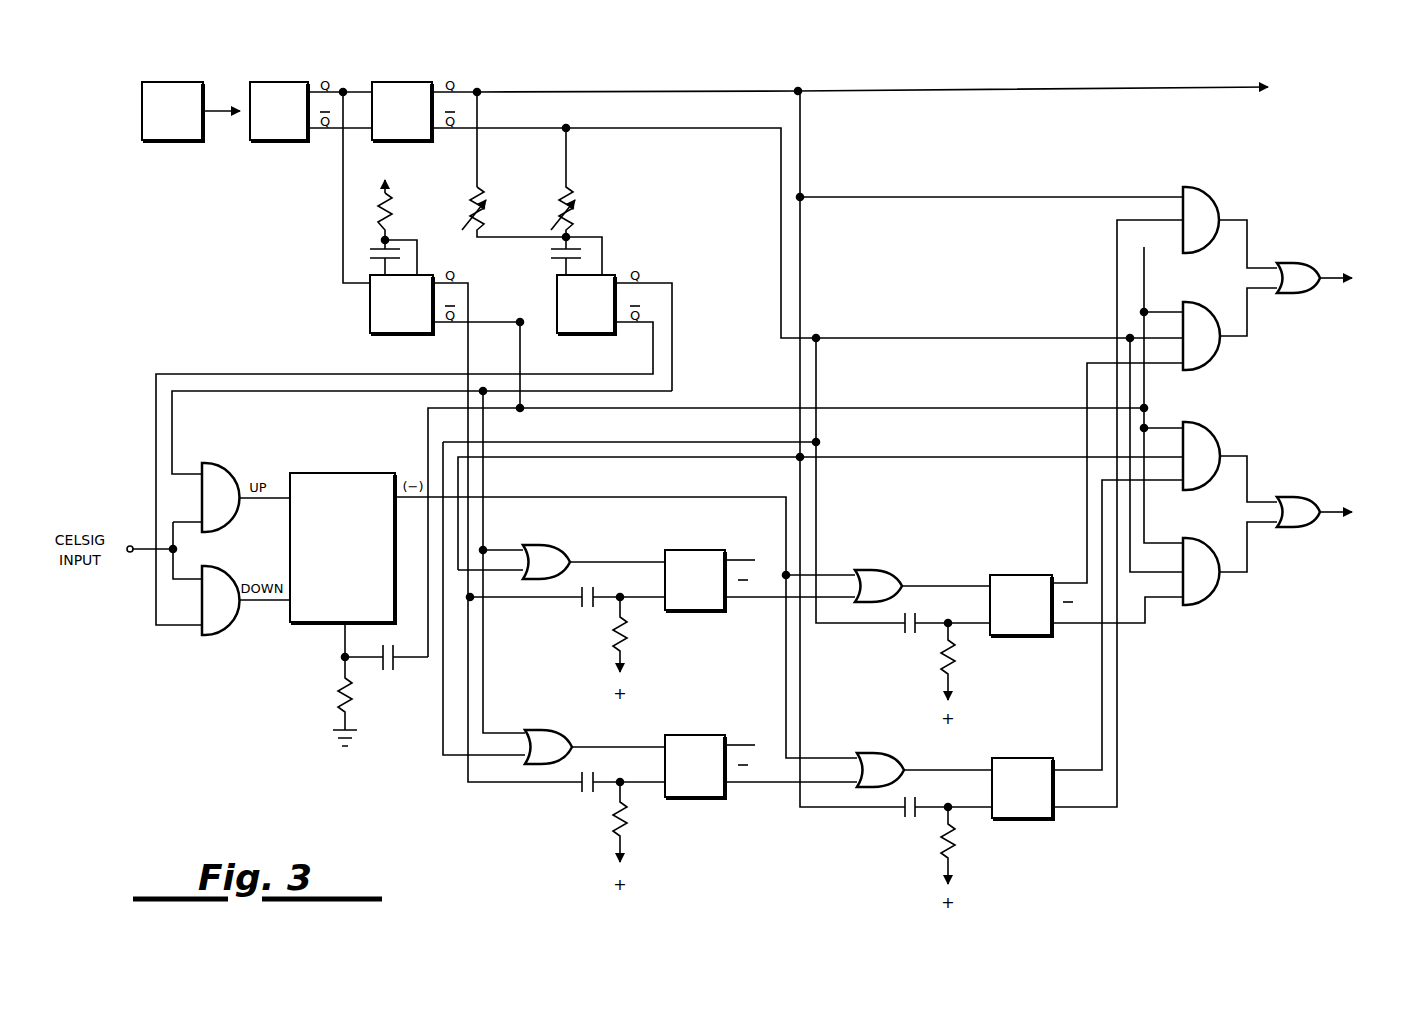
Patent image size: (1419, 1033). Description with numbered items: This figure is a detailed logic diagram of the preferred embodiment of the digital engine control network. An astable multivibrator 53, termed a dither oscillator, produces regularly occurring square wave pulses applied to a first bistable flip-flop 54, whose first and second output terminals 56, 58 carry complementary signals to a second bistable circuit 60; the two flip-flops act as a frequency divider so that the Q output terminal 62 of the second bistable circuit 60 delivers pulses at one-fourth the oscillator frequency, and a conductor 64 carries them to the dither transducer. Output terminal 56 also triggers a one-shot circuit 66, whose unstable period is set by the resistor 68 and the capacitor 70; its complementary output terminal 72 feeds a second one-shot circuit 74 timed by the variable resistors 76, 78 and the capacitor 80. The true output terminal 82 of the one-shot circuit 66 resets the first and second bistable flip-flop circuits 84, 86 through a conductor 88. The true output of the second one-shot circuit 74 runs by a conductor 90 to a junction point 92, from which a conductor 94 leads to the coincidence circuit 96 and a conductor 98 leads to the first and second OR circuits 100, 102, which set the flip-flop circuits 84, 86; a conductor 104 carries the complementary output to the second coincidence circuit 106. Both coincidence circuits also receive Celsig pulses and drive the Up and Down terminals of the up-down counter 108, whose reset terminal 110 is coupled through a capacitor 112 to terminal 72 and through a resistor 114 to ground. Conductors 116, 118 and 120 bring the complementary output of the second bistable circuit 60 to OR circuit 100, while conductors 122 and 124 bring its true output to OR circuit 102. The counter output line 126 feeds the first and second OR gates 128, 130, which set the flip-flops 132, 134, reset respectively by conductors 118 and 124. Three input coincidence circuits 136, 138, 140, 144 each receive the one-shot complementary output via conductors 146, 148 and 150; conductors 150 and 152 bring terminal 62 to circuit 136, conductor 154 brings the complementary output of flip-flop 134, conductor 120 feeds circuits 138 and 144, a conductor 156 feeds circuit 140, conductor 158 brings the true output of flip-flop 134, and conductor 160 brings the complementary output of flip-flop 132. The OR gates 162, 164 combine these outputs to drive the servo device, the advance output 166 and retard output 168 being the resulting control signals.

The astable multivibrator 53 is at (165, 84).
The first bistable flip-flop 54 is at (268, 84).
The first output terminal 56 is at (345, 85).
The second output terminal 58 is at (335, 136).
The second bistable circuit 60 is at (397, 84).
The Q output terminal 62 is at (479, 86).
The conductor 64 is at (963, 89).
The one-shot circuit 66 is at (398, 334).
The resistor 68 is at (390, 188).
The capacitor 70 is at (398, 250).
The complementary output terminal 72 is at (508, 320).
The second one-shot circuit 74 is at (590, 334).
The resistor 76 is at (482, 190).
The resistor 78 is at (575, 190).
The capacitor 80 is at (580, 250).
The true output terminal 82 is at (468, 288).
The first bistable flip-flop circuit 84 is at (680, 550).
The second bistable flip-flop circuit 86 is at (680, 735).
The conductor 88 is at (466, 778).
The conductor 90 is at (665, 288).
The junction point 92 is at (484, 388).
The conductor 94 is at (243, 392).
The coincidence circuit 96 is at (224, 466).
The conductor 98 is at (485, 488).
The first OR circuit 100 is at (552, 543).
The second OR circuit 102 is at (554, 728).
The conductor 104 is at (177, 375).
The second coincidence circuit 106 is at (224, 569).
The up-down counter 108 is at (328, 473).
The reset terminal 110 is at (342, 659).
The capacitor 112 is at (395, 672).
The resistor 114 is at (342, 697).
The conductor 116 is at (713, 441).
The conductor 118 is at (819, 377).
The conductor 120 is at (672, 128).
The conductor 122 is at (442, 732).
The conductor 124 is at (803, 274).
The output line 126 is at (708, 496).
The first OR gate 128 is at (882, 568).
The second OR gate 130 is at (884, 751).
The flip-flop 132 is at (1008, 575).
The flip-flop 134 is at (1010, 758).
The three input coincidence circuit 136 is at (1207, 188).
The three input coincidence circuit 138 is at (1207, 303).
The three input coincidence circuit 140 is at (1207, 423).
The three input coincidence circuit 144 is at (1207, 540).
The conductor 146 is at (1146, 527).
The conductor 148 is at (973, 407).
The conductor 150 is at (803, 142).
The conductor 152 is at (958, 196).
The conductor 154 is at (1119, 723).
The conductor 156 is at (973, 456).
The conductor 158 is at (1100, 679).
The conductor 160 is at (1147, 614).
The OR gate 162 is at (1305, 262).
The OR gate 164 is at (1305, 496).
The advance output 166 is at (1336, 282).
The retard output 168 is at (1336, 516).